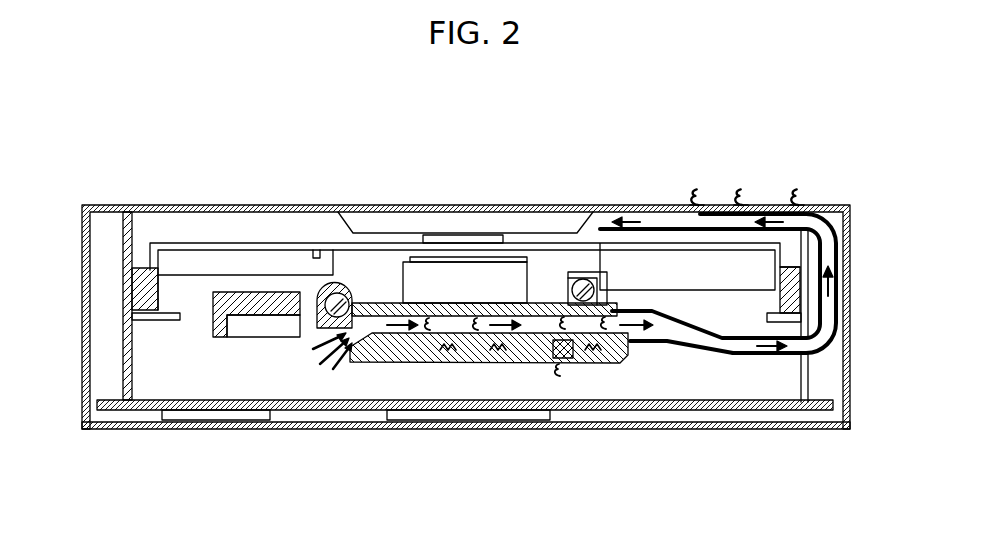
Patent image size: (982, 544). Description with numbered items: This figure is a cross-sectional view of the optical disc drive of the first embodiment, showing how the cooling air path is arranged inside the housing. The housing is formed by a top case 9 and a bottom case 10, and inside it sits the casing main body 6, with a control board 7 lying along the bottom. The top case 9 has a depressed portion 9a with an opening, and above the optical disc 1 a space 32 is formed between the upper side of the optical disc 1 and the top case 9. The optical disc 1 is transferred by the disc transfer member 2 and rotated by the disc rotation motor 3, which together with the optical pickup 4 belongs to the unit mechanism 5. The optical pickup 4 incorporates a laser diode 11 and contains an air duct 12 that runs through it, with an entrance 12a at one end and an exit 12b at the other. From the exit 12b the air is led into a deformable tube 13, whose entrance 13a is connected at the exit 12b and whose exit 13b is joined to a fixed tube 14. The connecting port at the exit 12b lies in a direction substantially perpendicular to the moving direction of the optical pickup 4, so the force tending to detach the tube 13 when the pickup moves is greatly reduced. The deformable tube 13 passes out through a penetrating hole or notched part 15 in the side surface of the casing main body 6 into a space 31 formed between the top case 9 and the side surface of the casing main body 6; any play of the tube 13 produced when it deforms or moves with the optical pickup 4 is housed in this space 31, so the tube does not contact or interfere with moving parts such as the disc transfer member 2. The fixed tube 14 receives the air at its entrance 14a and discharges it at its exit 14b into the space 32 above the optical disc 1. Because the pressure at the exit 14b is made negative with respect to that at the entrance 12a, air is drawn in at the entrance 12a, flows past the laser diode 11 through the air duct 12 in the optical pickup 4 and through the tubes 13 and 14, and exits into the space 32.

The optical disc 1 is at (345, 240).
The disc transfer member 2 is at (197, 243).
The disc rotation motor 3 is at (421, 257).
The optical pickup 4 is at (400, 363).
The unit mechanism 5 is at (213, 325).
The casing main body 6 is at (123, 328).
The control board 7 is at (591, 410).
The top case 9 is at (100, 205).
The depressed portion 9a is at (375, 225).
The bottom case 10 is at (106, 430).
The heat sensor / heating element 11 is at (555, 358).
The air duct 12 is at (467, 333).
The entrance of the air duct 12a is at (343, 352).
The exit of the air duct 12b is at (630, 352).
The deformable tube 13 is at (745, 354).
The entrance of the tube 13a is at (667, 340).
The exit of the tube 13b is at (832, 268).
The fixed tube 14 is at (720, 212).
The entrance of the tube 14a is at (828, 250).
The exit of the tube 14b is at (628, 215).
The penetrating hole or notched part 15 is at (808, 360).
The space 31 is at (834, 345).
The space 32 is at (594, 222).